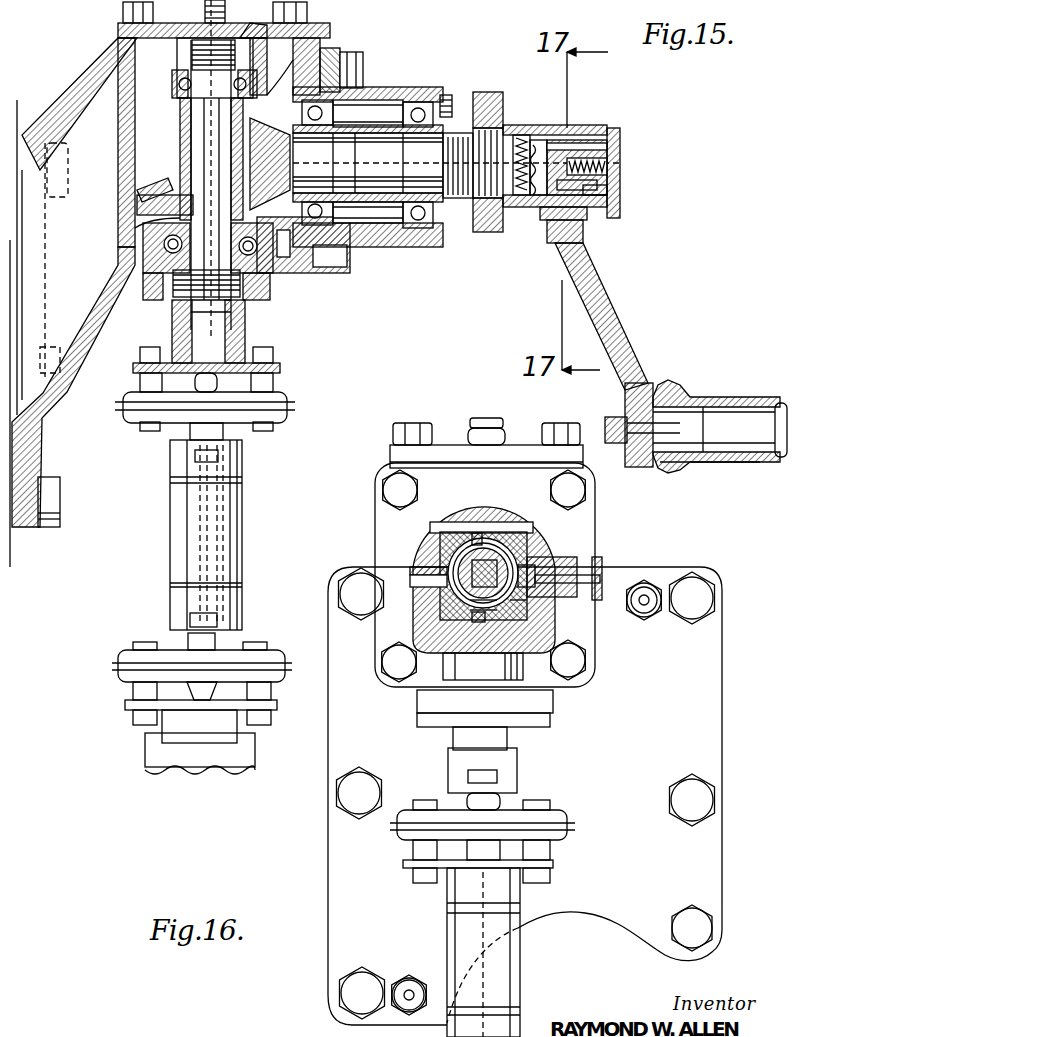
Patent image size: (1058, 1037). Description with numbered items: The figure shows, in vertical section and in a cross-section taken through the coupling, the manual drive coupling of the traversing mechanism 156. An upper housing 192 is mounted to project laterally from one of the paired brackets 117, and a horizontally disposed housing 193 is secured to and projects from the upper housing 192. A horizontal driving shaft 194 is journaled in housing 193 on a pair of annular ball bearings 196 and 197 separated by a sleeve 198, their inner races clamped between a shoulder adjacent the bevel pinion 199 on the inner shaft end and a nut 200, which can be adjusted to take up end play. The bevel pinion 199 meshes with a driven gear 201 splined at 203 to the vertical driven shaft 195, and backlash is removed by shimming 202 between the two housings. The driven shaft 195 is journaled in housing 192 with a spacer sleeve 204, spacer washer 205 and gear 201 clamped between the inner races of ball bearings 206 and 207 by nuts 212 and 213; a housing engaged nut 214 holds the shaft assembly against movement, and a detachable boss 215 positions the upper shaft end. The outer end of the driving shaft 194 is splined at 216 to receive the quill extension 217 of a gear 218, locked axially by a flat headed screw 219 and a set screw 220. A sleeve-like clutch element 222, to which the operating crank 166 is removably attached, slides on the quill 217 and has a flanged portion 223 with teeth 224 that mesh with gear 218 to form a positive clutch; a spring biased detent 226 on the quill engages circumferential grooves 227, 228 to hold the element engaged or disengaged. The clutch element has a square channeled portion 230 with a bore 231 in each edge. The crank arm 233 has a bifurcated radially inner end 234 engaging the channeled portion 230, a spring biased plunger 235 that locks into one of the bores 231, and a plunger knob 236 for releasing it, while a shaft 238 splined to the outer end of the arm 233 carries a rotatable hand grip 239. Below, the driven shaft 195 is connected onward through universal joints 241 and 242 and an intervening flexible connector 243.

In FIG. 15, the paired bracket 117 is at (28, 108).
In FIG. 15, the traversing mechanism 156 is at (300, 338).
In FIG. 15, the operating crank 166 is at (688, 370).
In FIG. 15, the upper housing 192 is at (298, 272).
In FIG. 16, the upper housing 192 is at (695, 667).
In FIG. 15, the horizontally disposed housing 193 is at (345, 262).
In FIG. 16, the horizontally disposed housing 193 is at (380, 505).
In FIG. 15, the driving shaft 194 is at (368, 173).
In FIG. 16, the driving shaft 194 is at (485, 555).
In FIG. 15, the driven shaft 195 is at (204, 134).
In FIG. 15, the annular ball bearing 196 is at (335, 95).
In FIG. 15, the annular ball bearing 197 is at (420, 105).
In FIG. 15, the sleeve 198 is at (385, 125).
In FIG. 15, the bevel pinion 199 is at (300, 45).
In FIG. 15, the nut 200 is at (456, 212).
In FIG. 15, the driven gear 201 is at (168, 203).
In FIG. 15, the shimming 202 is at (322, 58).
In FIG. 15, the spline 203 is at (204, 185).
In FIG. 15, the spacer sleeve 204 is at (190, 108).
In FIG. 15, the spacer washer 205 is at (140, 226).
In FIG. 15, the ball bearing 206 is at (250, 82).
In FIG. 15, the ball bearing 207 is at (275, 285).
In FIG. 15, the nut 212 is at (300, 22).
In FIG. 15, the nut 213 is at (180, 308).
In FIG. 15, the housing engaged nut 214 is at (249, 300).
In FIG. 16, the housing engaged nut 214 is at (540, 725).
In FIG. 15, the detachable boss 215 is at (120, 34).
In FIG. 15, the spline 216 is at (596, 140).
In FIG. 16, the spline 216 is at (470, 612).
In FIG. 15, the quill extension 217 is at (586, 140).
In FIG. 16, the quill extension 217 is at (468, 598).
In FIG. 15, the gear 218 is at (492, 108).
In FIG. 15, the flat headed screw 219 is at (620, 150).
In FIG. 15, the set screw 220 is at (608, 181).
In FIG. 15, the clutch element 222 is at (521, 130).
In FIG. 15, the flanged portion 223 is at (492, 235).
In FIG. 15, the teeth 224 is at (487, 235).
In FIG. 15, the spring biased detent 226 is at (539, 135).
In FIG. 15, the circumferential groove 227 is at (530, 222).
In FIG. 15, the circumferential groove 228 is at (497, 235).
In FIG. 15, the channeled portion 230 is at (577, 140).
In FIG. 16, the channeled portion 230 is at (505, 540).
In FIG. 16, the bore 231 is at (475, 535).
In FIG. 15, the arm 233 is at (606, 306).
In FIG. 16, the arm 233 is at (500, 665).
In FIG. 16, the radially inner end 234 is at (530, 612).
In FIG. 16, the spring biased plunger 235 is at (550, 557).
In FIG. 16, the plunger knob 236 is at (605, 560).
In FIG. 15, the shaft 238 is at (740, 418).
In FIG. 15, the hand grip 239 is at (700, 470).
In FIG. 15, the universal joint 241 is at (288, 390).
In FIG. 16, the universal joint 241 is at (568, 828).
In FIG. 15, the universal joint 242 is at (285, 642).
In FIG. 15, the flexible connector 243 is at (243, 540).
In FIG. 16, the flexible connector 243 is at (447, 925).